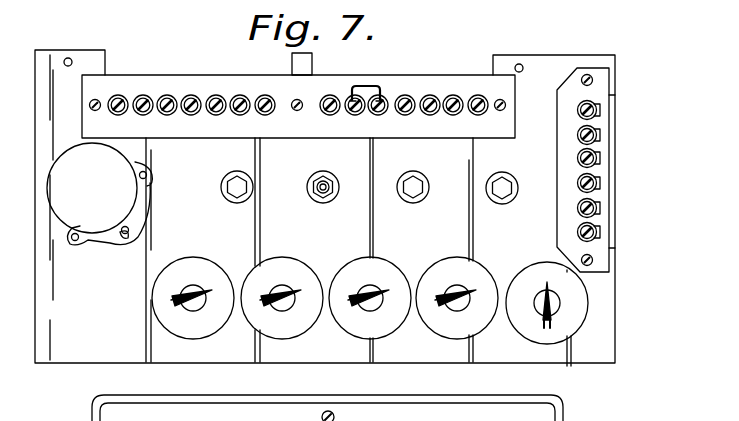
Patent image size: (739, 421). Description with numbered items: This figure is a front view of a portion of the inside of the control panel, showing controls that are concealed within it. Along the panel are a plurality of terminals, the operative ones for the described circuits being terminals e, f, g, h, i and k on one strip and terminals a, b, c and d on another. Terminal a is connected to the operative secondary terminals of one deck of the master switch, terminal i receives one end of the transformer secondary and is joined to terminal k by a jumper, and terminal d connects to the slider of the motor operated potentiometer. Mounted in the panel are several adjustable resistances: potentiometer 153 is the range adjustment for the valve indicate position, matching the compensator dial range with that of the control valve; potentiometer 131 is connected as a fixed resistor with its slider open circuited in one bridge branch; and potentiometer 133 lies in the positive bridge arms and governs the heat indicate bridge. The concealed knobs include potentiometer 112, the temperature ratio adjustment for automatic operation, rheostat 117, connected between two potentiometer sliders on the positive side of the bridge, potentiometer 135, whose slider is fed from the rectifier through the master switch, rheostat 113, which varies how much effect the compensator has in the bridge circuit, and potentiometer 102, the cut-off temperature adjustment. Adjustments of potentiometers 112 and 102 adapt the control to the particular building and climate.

The terminal e is at (121, 96).
The terminal f is at (170, 96).
The terminal g is at (243, 96).
The terminal h is at (333, 96).
The terminal i is at (354, 97).
The terminal k is at (384, 99).
The terminal a is at (600, 110).
The terminal b is at (600, 135).
The terminal c is at (600, 158).
The terminal d is at (600, 183).
The potentiometer 153 is at (250, 180).
The potentiometer 131 is at (337, 180).
The potentiometer 133 is at (502, 176).
The potentiometer 112 is at (165, 312).
The rheostat 117 is at (268, 330).
The potentiometer 135 is at (359, 330).
The potentiometer 113 is at (456, 330).
The potentiometer 102 is at (528, 320).